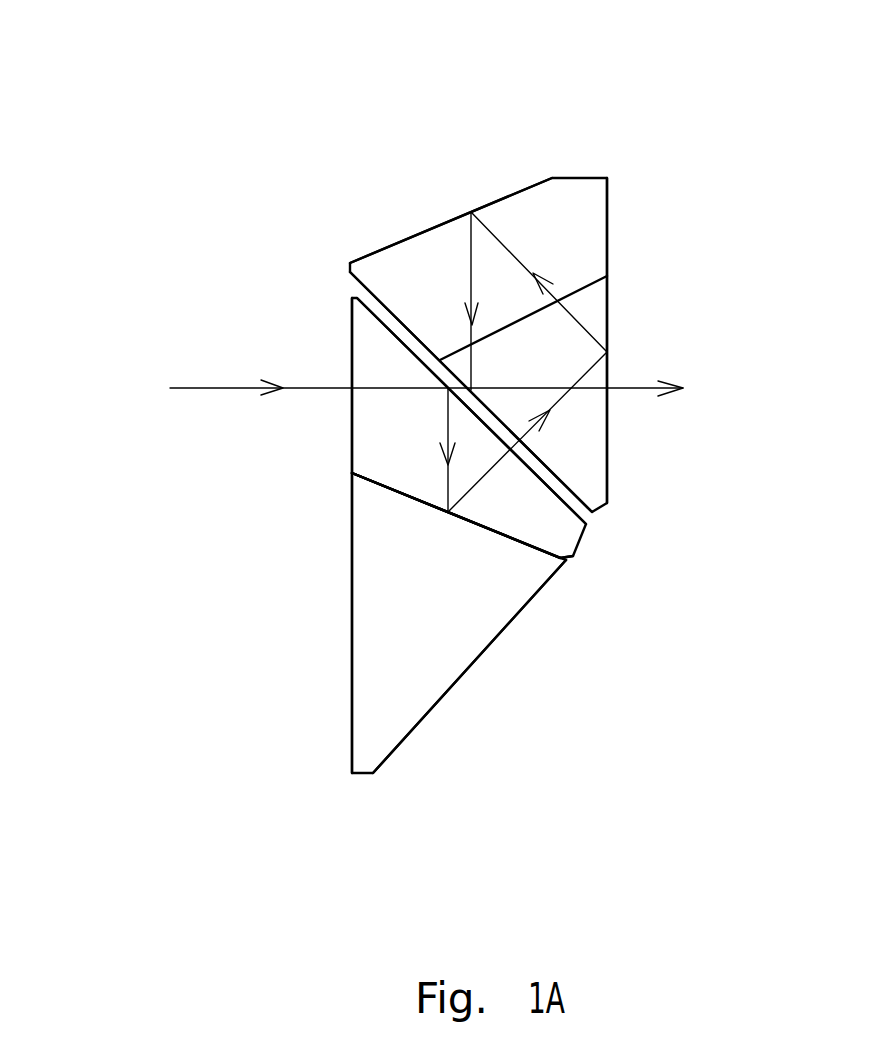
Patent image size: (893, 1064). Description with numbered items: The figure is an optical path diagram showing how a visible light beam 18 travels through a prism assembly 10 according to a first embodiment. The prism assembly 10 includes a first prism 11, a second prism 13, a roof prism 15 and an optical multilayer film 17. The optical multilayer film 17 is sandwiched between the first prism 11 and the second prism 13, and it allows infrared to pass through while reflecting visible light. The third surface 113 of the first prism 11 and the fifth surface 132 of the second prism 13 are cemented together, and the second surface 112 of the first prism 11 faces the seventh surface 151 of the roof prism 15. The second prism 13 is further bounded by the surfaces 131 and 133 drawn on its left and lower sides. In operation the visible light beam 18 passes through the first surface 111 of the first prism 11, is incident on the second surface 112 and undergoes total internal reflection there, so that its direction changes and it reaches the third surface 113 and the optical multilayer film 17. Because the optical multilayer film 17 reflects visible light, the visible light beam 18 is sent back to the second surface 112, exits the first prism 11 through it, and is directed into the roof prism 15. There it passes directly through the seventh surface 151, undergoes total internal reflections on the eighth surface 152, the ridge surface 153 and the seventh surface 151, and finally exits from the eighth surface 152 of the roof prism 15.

The prism assembly 10 is at (178, 33).
The first prism 11 is at (345, 346).
The first surface 111 is at (352, 357).
The second surface 112 is at (362, 338).
The third surface 113 is at (375, 480).
The second prism 13 is at (450, 633).
The side surface of lower prism 131 is at (350, 688).
The fifth surface 132 is at (395, 493).
The bottom inclined surface of lower prism 133 is at (417, 730).
The roof prism 15 is at (407, 272).
The seventh surface 151 is at (560, 475).
The eighth surface 152 is at (607, 258).
The ridge surface 153 is at (493, 202).
The optical multilayer film 17 is at (508, 540).
The visible light beam 18 is at (225, 388).